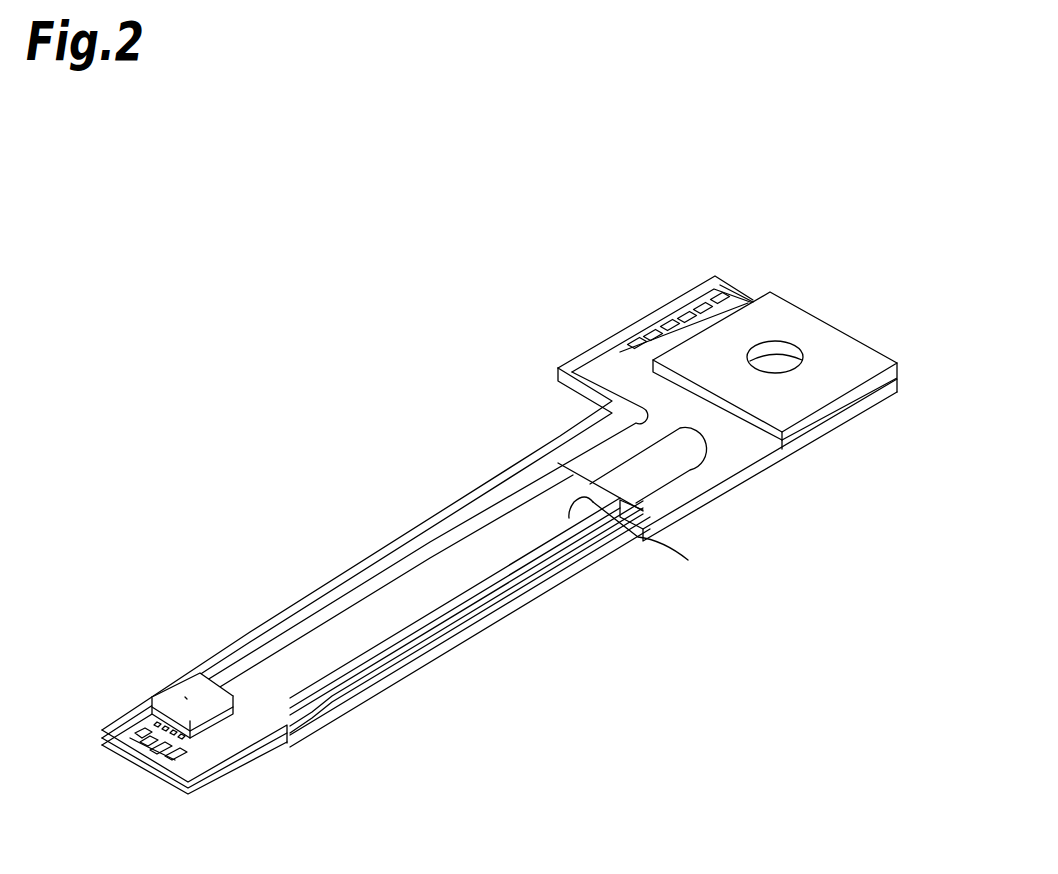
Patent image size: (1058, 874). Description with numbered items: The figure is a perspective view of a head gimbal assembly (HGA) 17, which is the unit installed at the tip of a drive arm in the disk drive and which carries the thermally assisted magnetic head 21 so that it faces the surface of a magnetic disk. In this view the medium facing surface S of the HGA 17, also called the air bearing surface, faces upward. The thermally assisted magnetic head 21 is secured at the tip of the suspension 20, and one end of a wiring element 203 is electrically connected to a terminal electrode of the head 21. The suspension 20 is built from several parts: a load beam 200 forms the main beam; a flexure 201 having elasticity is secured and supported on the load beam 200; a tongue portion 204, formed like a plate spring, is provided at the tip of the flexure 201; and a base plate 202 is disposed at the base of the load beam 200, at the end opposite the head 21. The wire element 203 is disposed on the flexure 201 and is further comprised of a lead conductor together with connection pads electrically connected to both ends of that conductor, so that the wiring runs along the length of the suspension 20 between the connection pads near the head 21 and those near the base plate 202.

The head gimbal assembly 17 is at (595, 288).
The suspension 20 is at (492, 462).
The thermally assisted magnetic head 21 is at (172, 682).
The medium facing surface S is at (185, 697).
The load beam 200 is at (743, 452).
The flexure 201 is at (656, 539).
The base plate 202 is at (850, 357).
The wiring element 203 is at (405, 635).
The tongue portion 204 is at (210, 738).